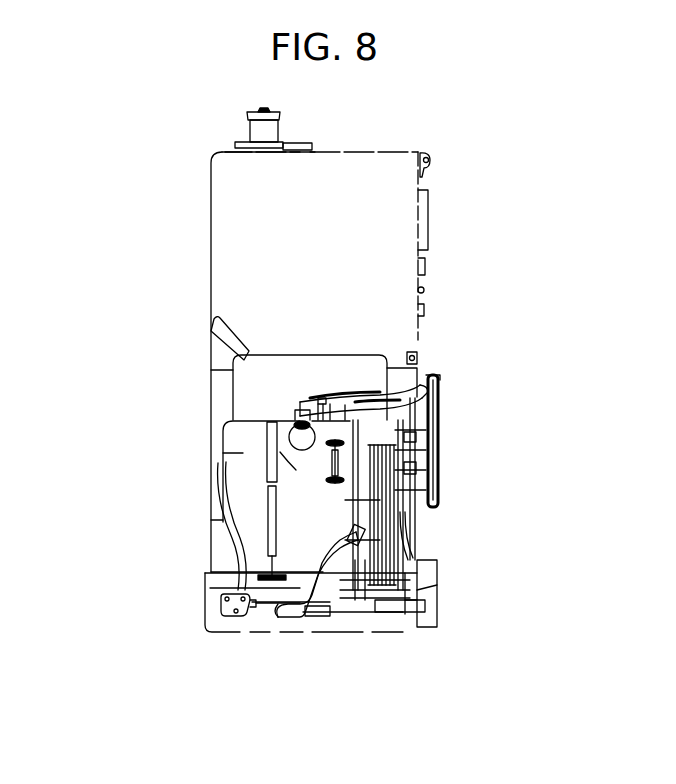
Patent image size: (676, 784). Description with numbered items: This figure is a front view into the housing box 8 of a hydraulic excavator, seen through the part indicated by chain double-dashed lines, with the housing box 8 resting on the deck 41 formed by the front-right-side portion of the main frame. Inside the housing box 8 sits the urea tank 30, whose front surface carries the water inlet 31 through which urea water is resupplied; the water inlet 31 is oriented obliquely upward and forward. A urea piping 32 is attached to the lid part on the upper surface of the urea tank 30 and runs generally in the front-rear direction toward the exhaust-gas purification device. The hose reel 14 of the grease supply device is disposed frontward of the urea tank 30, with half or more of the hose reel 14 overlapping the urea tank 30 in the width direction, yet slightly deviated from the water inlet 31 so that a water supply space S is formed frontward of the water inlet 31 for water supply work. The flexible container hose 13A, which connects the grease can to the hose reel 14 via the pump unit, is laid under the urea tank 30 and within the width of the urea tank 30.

The housing box 8 is at (207, 548).
The urea tank 30 is at (240, 452).
The water inlet 31 is at (294, 419).
The water supply space S is at (290, 457).
The urea piping 32 is at (355, 403).
The hose reel 14 is at (433, 488).
The deck 41 is at (245, 633).
The container hose 13A is at (297, 618).